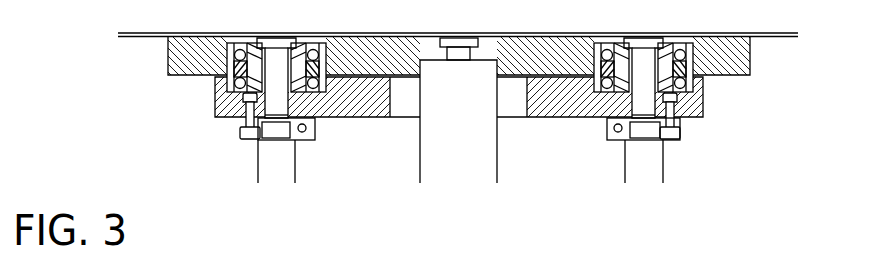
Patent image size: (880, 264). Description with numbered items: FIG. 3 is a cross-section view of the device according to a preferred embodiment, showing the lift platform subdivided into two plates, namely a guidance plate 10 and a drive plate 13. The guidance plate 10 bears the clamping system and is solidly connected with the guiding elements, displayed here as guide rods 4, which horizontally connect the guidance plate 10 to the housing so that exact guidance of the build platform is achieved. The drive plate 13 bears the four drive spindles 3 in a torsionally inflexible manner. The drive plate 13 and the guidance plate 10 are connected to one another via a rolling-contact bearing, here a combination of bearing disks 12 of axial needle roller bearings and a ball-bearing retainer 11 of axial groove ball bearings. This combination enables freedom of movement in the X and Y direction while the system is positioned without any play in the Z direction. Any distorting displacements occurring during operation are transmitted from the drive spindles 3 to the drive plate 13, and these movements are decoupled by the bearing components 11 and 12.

The drive spindle 3 is at (430, 171).
The guide rod 4 is at (272, 150).
The guidance plate 10 is at (173, 42).
The ball-bearing retainer 11 is at (227, 63).
The bearing disk 12 is at (217, 88).
The drive plate 13 is at (240, 113).